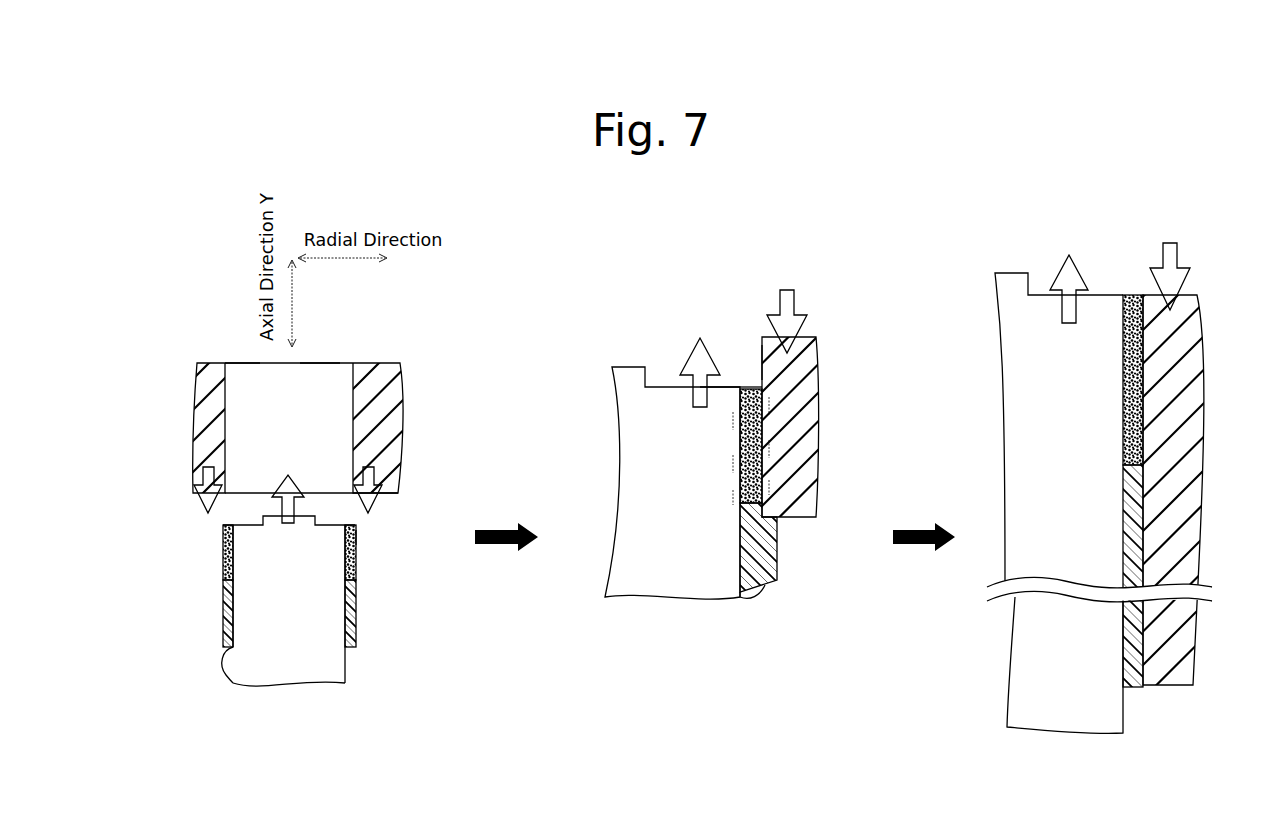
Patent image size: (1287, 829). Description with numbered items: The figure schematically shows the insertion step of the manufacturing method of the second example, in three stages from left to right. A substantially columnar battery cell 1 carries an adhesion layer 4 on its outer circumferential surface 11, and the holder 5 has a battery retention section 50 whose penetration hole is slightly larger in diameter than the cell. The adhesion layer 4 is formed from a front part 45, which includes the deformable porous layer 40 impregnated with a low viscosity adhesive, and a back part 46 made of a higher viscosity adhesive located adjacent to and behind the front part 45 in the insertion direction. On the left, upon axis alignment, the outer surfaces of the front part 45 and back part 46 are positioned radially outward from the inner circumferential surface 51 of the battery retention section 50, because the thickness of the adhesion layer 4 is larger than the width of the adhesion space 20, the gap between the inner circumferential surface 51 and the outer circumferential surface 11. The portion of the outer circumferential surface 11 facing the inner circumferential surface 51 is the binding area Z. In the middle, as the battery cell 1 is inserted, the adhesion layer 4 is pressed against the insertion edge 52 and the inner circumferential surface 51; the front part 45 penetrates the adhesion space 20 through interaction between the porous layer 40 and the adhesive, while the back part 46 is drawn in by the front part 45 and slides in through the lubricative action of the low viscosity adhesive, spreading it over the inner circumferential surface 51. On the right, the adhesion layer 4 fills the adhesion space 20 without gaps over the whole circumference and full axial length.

The battery cell 1 is at (1065, 715).
The adhesion layer 4 is at (656, 513).
The holder 5 is at (1190, 338).
The outer circumferential surface 11 is at (748, 588).
The adhesion space 20 is at (746, 381).
The porous layer 40 is at (739, 419).
The front part 45 is at (1131, 440).
The back part 46 is at (1129, 498).
The battery retention section 50 is at (718, 351).
The inner circumferential surface 51 is at (763, 372).
The insertion edge 52 is at (386, 500).
The binding area Z is at (366, 538).